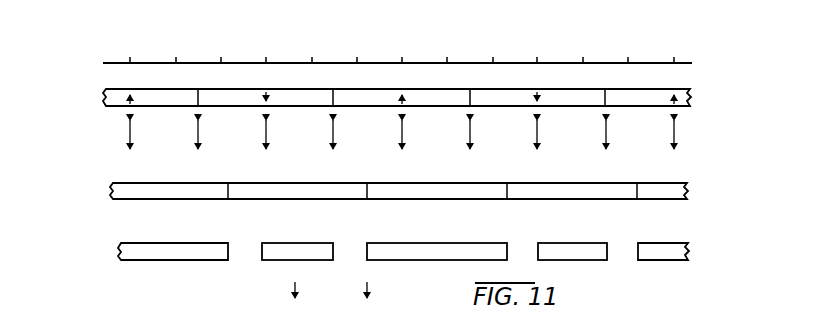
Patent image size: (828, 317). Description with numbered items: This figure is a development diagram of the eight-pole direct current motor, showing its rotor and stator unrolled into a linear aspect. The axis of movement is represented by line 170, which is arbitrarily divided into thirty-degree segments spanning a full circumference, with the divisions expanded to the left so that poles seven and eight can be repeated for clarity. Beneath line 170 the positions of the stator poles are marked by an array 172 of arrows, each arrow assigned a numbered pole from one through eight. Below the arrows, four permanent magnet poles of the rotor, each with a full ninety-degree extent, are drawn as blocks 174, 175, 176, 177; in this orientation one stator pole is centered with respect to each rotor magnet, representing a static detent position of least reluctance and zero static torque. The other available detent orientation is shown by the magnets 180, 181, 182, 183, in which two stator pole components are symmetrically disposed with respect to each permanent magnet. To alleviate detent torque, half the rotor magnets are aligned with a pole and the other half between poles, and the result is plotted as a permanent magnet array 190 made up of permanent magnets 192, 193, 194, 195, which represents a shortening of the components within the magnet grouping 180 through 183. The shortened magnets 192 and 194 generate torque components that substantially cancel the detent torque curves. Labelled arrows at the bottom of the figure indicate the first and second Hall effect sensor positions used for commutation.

The line 170 is at (118, 64).
The array of arrows 172 is at (435, 122).
The block 174 is at (272, 89).
The block 175 is at (398, 89).
The block 176 is at (541, 89).
The block 177 is at (143, 89).
The magnet 180 is at (272, 183).
The magnet 181 is at (407, 183).
The magnet 182 is at (543, 183).
The magnet 183 is at (137, 183).
The permanent magnet array 190 is at (445, 255).
The permanent magnet 192 is at (297, 243).
The permanent magnet 193 is at (430, 243).
The permanent magnet 194 is at (565, 243).
The permanent magnet 195 is at (168, 243).